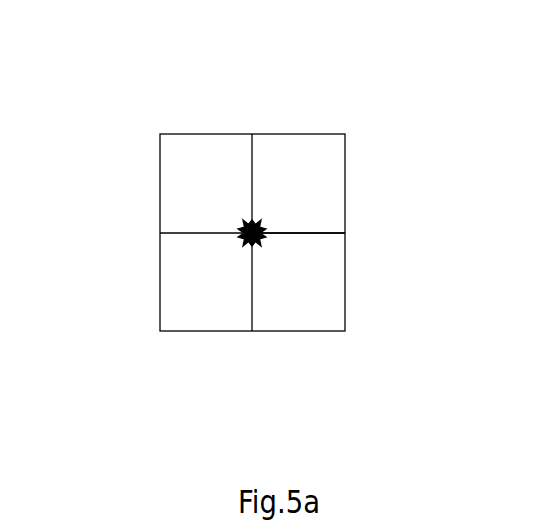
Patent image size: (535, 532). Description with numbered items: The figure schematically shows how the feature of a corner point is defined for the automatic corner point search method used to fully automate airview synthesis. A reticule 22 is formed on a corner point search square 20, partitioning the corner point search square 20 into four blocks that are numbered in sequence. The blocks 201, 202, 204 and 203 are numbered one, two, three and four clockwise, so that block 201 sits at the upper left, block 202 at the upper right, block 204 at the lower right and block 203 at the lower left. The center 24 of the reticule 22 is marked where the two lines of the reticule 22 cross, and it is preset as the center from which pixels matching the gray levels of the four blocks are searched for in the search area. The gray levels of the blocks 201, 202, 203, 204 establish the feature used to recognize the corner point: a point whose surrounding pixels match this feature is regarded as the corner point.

The corner point search square 20 is at (293, 134).
The block 201 is at (182, 145).
The block 202 is at (333, 190).
The block 203 is at (182, 298).
The block 204 is at (300, 320).
The center of the reticule 24 is at (240, 232).
The reticule 22 is at (312, 235).